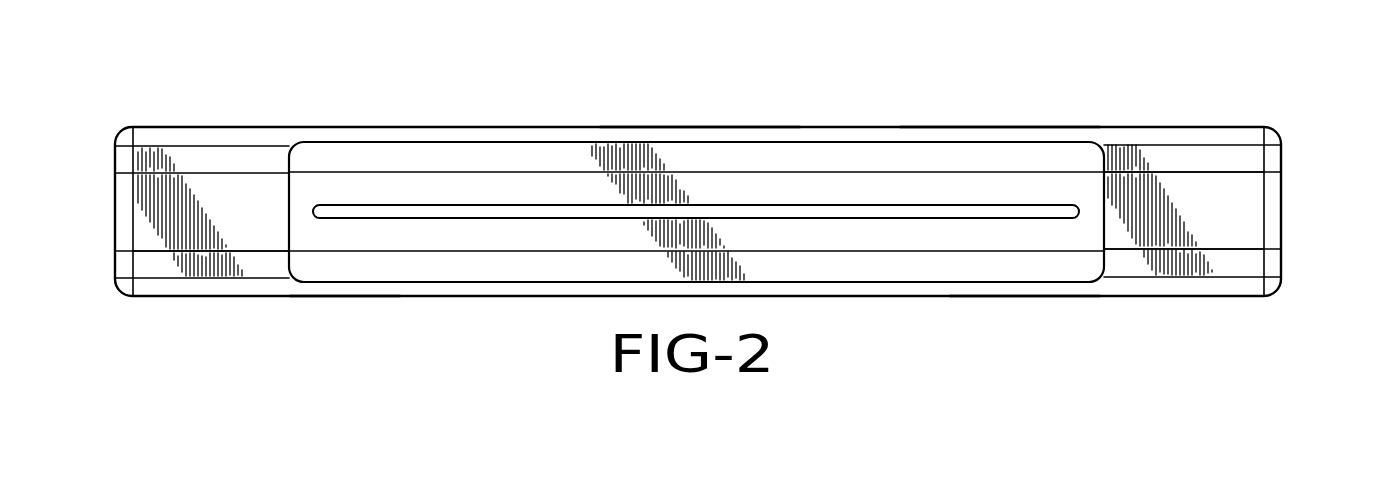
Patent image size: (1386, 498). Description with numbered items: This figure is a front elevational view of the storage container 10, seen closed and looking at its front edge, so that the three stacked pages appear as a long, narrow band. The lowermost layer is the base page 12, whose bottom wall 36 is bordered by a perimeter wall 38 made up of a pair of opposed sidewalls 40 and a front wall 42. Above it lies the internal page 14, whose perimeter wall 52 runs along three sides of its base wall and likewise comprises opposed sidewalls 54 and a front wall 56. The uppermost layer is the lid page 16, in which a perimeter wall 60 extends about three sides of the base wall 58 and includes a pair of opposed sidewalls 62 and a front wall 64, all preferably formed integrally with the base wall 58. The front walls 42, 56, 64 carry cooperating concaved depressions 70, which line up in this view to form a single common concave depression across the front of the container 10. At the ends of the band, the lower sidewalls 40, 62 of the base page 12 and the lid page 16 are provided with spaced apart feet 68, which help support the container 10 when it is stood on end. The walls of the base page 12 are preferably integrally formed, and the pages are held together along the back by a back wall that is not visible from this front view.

The storage container 10 is at (923, 97).
The base page 12 is at (1013, 295).
The internal page 14 is at (907, 240).
The lid page 16 is at (1022, 127).
The bottom wall 36 is at (322, 297).
The perimeter wall 38 is at (1138, 265).
The sidewalls 40 is at (113, 268).
The front wall 42 is at (167, 267).
The perimeter wall 52 is at (1204, 213).
The sidewalls 54 is at (113, 210).
The front wall 56 is at (252, 212).
The base wall 58 is at (720, 128).
The perimeter wall 60 is at (1221, 158).
The sidewalls 62 is at (113, 160).
The front wall 64 is at (1171, 158).
The feet 68 is at (113, 166).
The concaved depressions 70 is at (488, 155).